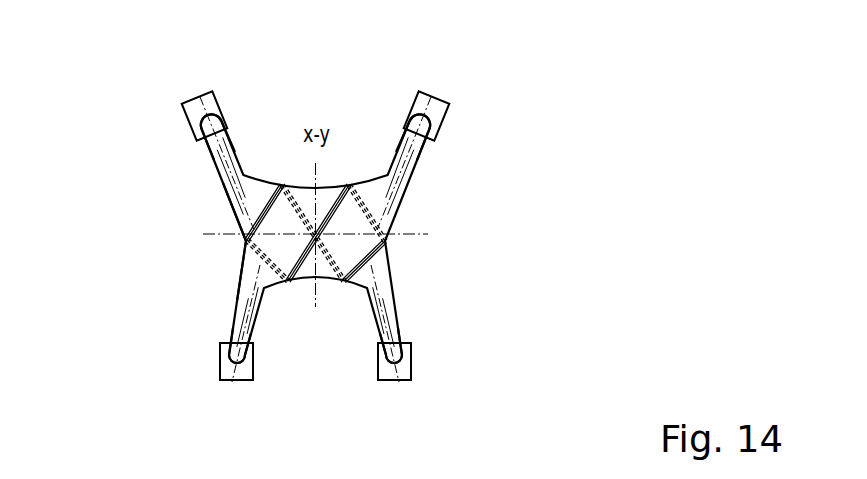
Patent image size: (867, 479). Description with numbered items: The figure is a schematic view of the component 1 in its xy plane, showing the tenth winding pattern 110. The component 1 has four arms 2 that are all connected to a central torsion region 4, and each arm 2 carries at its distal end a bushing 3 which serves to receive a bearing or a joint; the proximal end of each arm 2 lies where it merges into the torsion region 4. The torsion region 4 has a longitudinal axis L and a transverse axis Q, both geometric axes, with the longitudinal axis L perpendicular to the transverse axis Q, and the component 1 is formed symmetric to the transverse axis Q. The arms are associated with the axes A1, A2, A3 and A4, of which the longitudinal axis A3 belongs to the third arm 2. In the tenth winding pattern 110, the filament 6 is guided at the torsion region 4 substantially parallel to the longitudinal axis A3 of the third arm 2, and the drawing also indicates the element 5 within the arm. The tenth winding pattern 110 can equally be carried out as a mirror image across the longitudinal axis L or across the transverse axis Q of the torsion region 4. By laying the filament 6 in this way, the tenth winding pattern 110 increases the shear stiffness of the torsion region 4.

The component 1 is at (157, 123).
The arm 2 is at (234, 152).
The bushing 3 is at (216, 98).
The torsion region 4 is at (342, 257).
The fiber strand in arm 5 is at (388, 302).
The filament 6 is at (242, 225).
The tenth winding pattern 110 is at (242, 252).
The longitudinal axis L is at (215, 235).
The transverse axis Q is at (315, 295).
The first connection point A1 is at (210, 150).
The second connection point A2 is at (390, 325).
The longitudinal axis of the third arm A3 is at (426, 138).
The fourth connection point A4 is at (238, 298).